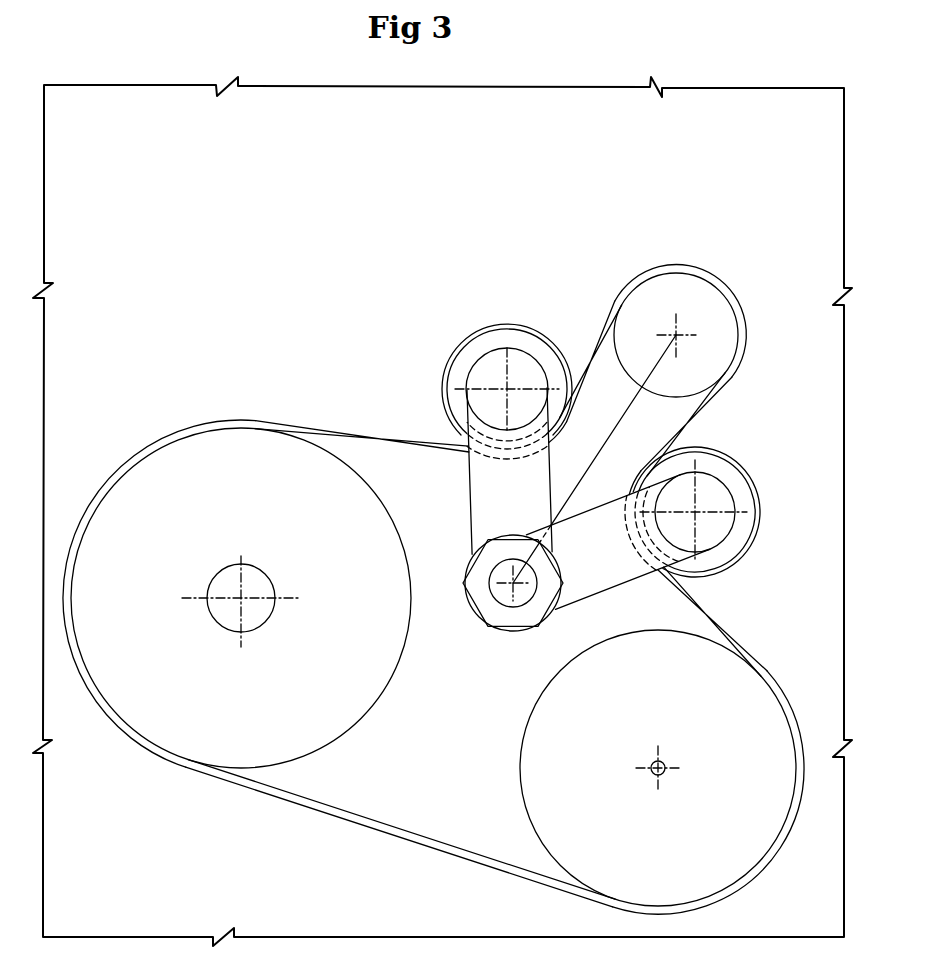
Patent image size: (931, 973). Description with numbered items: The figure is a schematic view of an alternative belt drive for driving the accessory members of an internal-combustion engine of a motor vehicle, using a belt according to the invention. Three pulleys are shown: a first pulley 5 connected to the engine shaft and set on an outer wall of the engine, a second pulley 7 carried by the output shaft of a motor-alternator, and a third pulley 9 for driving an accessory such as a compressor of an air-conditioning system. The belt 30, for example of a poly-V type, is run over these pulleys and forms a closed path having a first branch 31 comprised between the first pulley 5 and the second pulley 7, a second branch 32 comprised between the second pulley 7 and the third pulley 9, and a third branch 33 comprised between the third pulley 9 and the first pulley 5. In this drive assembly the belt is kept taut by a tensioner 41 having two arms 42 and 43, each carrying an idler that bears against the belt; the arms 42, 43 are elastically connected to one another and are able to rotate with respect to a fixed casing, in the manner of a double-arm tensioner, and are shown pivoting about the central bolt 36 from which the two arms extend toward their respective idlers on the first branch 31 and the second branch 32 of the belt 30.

The first pulley 5 is at (163, 462).
The second pulley 7 is at (652, 300).
The third pulley 9 is at (750, 848).
The belt 30 is at (433, 590).
The first branch 31 is at (363, 433).
The second branch 32 is at (708, 612).
The third branch 33 is at (332, 836).
The pivot bolt 36 is at (510, 603).
The tensioner 41 is at (579, 502).
The arm 42 is at (477, 486).
The arm 43 is at (608, 566).